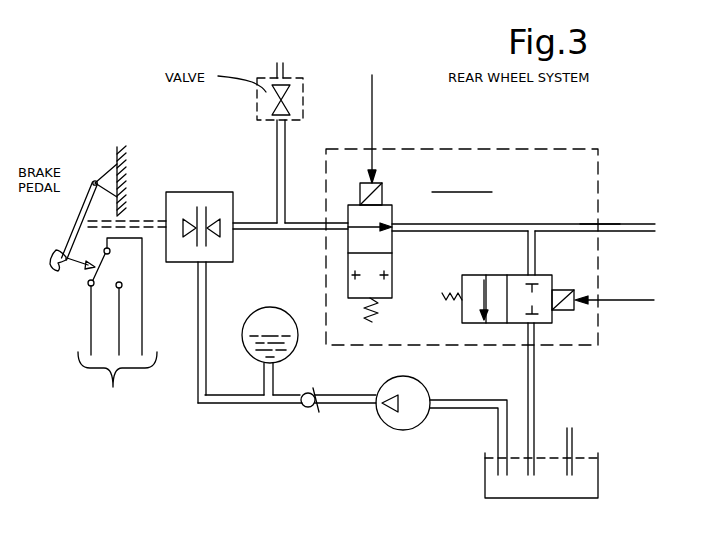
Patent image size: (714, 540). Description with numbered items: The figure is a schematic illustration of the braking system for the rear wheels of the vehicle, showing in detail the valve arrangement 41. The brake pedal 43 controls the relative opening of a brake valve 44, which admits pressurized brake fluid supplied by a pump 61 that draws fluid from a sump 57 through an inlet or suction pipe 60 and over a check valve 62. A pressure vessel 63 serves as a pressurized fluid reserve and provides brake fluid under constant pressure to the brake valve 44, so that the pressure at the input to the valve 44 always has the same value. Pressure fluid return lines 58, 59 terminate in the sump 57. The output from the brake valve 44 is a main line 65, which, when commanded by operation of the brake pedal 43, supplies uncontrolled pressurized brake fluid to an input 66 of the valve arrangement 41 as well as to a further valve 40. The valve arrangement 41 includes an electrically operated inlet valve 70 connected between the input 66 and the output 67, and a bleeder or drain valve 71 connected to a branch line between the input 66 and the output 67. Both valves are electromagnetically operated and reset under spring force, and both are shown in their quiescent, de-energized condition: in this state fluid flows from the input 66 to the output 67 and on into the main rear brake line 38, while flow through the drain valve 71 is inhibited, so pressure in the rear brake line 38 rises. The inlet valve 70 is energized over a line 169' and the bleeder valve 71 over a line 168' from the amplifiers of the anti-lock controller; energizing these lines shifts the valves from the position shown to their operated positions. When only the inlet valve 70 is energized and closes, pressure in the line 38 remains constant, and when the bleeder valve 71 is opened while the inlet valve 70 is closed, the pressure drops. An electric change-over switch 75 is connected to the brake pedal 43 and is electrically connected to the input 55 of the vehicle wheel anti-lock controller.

The main rear brake line 38 is at (640, 224).
The valve 40 is at (262, 112).
The valve arrangement 41 is at (470, 149).
The brake pedal 43 is at (86, 208).
The brake valve 44 is at (183, 192).
The input of the controller 55 is at (117, 331).
The sump 57 is at (599, 472).
The pressure fluid return line 58 is at (534, 414).
The pressure fluid return line 59 is at (573, 437).
The inlet or suction pipe 60 is at (472, 400).
The pump 61 is at (392, 430).
The check valve 62 is at (307, 410).
The pressure vessel 63 is at (288, 356).
The main line 65 is at (272, 231).
The input of valve arrangement 66 is at (320, 232).
The output of valve arrangement 67 is at (600, 222).
The inlet valve 70 is at (393, 241).
The drain valve 71 is at (462, 322).
The electric change-over switch 75 is at (91, 278).
The line to bleeder valve 168' is at (624, 289).
The line to inlet valve 169' is at (351, 129).